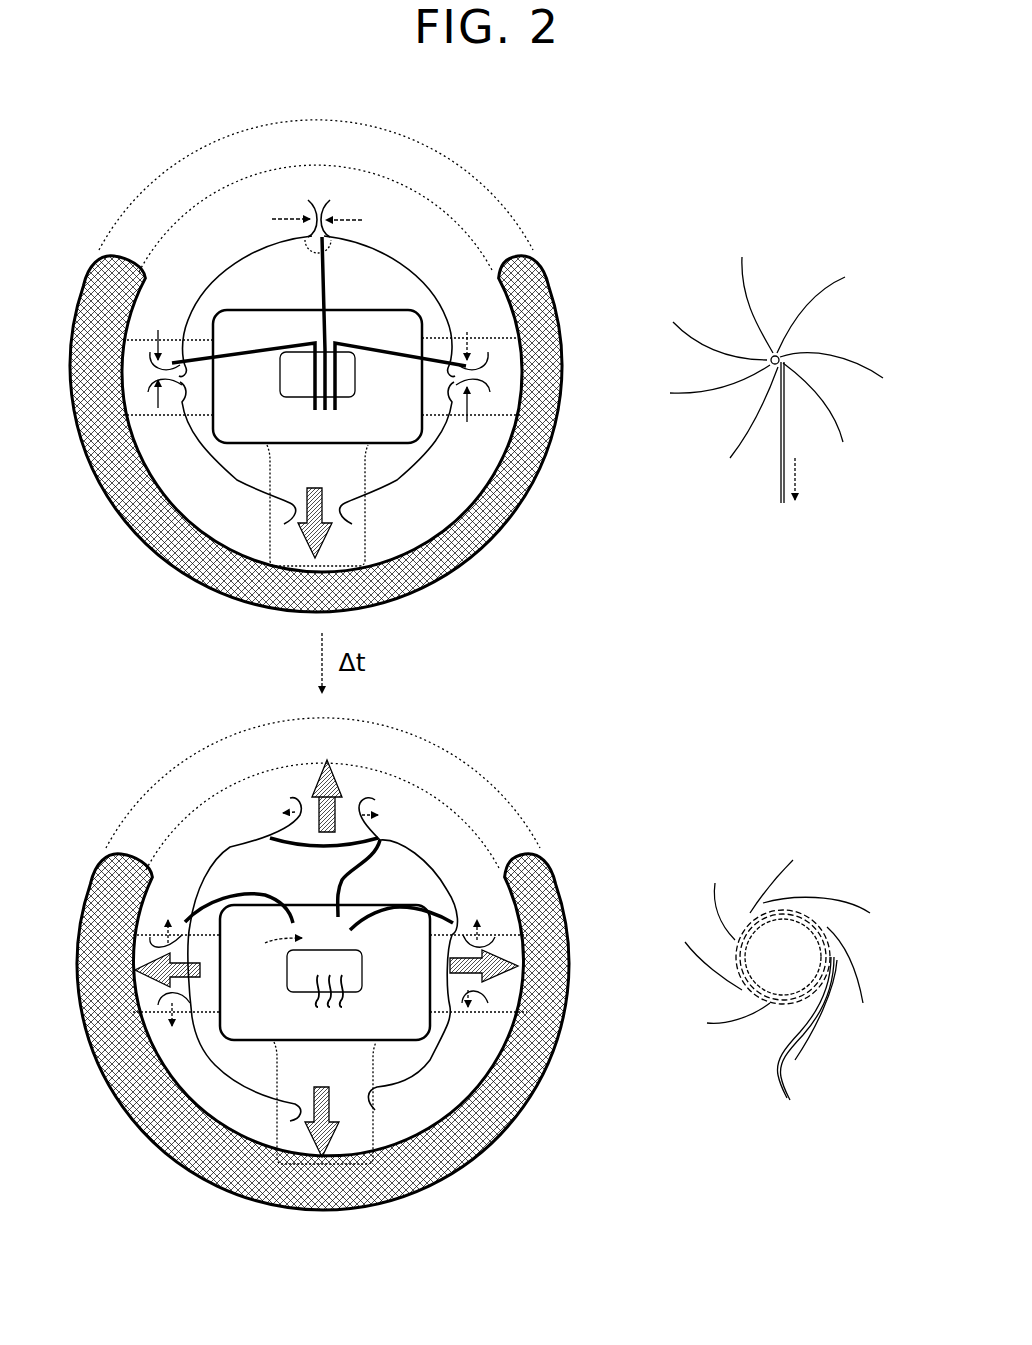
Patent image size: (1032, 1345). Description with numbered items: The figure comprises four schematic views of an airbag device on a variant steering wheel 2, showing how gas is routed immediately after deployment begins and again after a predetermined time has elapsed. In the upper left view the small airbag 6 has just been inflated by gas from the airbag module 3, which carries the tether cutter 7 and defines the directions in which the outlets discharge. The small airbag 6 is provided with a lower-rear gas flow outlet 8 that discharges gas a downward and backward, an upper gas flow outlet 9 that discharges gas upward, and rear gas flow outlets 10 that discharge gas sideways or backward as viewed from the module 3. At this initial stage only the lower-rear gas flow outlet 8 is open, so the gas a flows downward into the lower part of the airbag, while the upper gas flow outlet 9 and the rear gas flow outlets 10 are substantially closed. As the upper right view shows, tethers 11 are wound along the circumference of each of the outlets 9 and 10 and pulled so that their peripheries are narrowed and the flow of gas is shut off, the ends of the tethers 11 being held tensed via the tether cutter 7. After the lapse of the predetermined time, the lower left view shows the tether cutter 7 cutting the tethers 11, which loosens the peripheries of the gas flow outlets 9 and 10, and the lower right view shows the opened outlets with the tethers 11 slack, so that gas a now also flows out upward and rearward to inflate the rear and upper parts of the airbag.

The steering wheel rim 2 is at (132, 538).
The airbag module 3 is at (250, 413).
The small airbag 6 is at (400, 480).
The tether cutter 7 is at (360, 377).
The lower-rear gas flow outlet 8 is at (286, 510).
The upper gas flow outlet 9 is at (324, 210).
The rear gas flow outlets 10 is at (170, 367).
The tethers 11 is at (328, 293).
The gas a is at (322, 543).